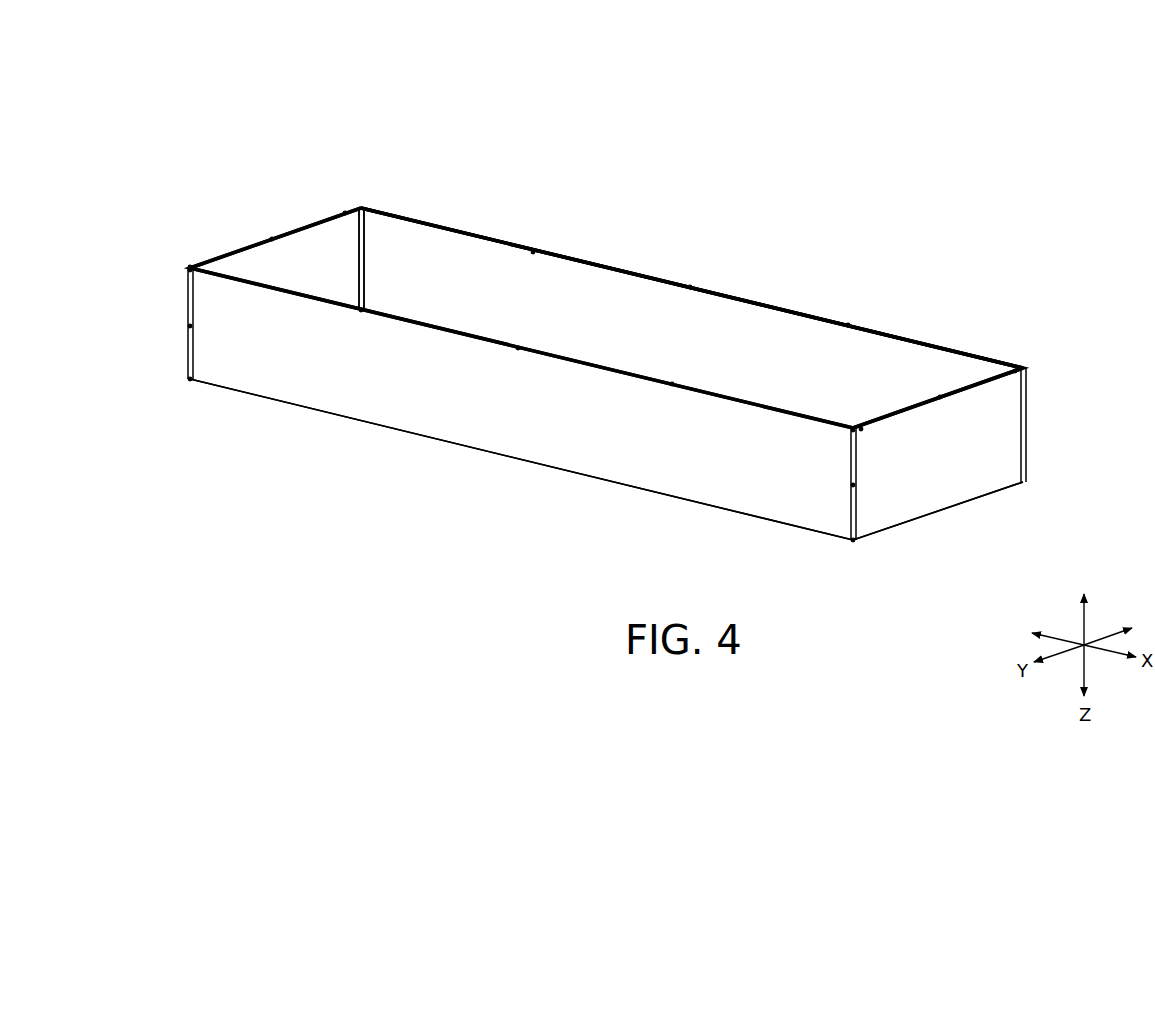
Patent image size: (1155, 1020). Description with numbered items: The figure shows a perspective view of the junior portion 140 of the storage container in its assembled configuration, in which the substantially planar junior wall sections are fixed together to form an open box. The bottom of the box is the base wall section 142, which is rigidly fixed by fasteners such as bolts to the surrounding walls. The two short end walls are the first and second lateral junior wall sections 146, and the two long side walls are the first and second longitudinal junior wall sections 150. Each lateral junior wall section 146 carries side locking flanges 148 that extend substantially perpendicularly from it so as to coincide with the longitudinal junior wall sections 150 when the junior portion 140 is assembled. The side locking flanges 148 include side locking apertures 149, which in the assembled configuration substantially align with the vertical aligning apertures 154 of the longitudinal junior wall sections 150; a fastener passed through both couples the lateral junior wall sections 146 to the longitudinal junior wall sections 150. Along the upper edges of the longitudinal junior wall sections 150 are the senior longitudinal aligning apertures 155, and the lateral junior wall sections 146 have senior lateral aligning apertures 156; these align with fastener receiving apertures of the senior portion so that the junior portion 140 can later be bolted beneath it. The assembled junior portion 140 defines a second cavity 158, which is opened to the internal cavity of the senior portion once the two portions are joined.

The junior portion 140 is at (752, 136).
The base wall section 142 is at (468, 452).
The first and second lateral junior wall sections 146 is at (232, 222).
The side locking flanges 148 is at (352, 258).
The side locking apertures 149 is at (368, 212).
The first and second longitudinal junior wall sections 150 is at (569, 246).
The vertical aligning apertures 154 is at (188, 270).
The senior longitudinal aligning apertures 155 is at (360, 312).
The senior lateral aligning apertures 156 is at (190, 266).
The second cavity 158 is at (744, 356).